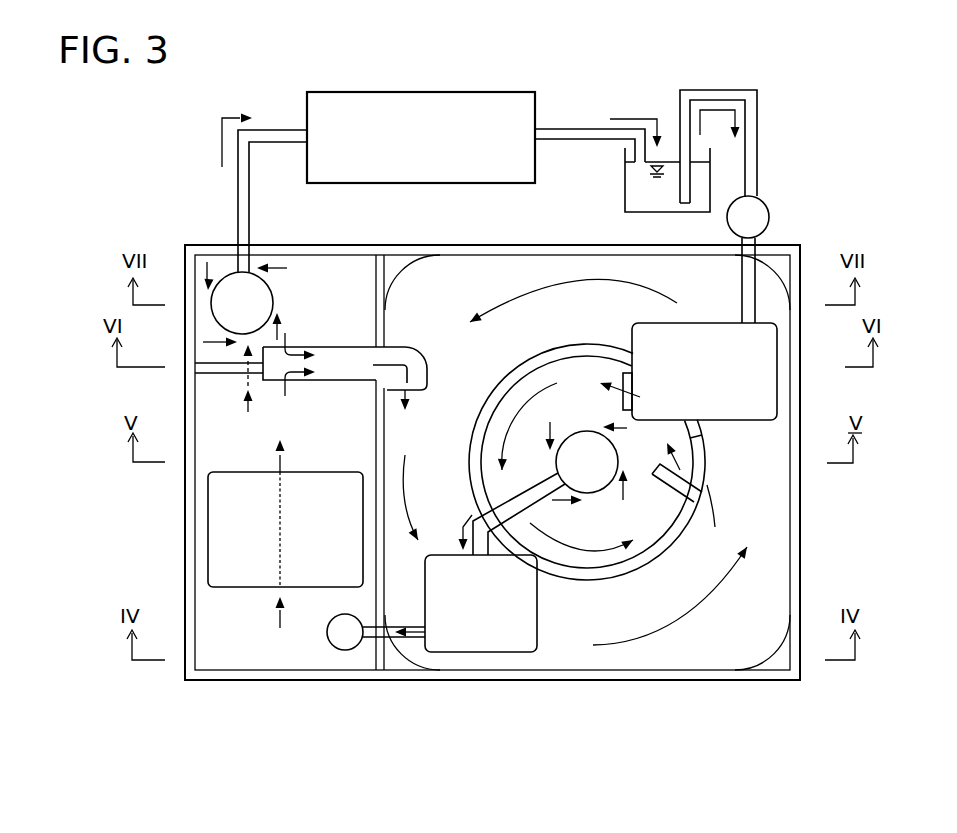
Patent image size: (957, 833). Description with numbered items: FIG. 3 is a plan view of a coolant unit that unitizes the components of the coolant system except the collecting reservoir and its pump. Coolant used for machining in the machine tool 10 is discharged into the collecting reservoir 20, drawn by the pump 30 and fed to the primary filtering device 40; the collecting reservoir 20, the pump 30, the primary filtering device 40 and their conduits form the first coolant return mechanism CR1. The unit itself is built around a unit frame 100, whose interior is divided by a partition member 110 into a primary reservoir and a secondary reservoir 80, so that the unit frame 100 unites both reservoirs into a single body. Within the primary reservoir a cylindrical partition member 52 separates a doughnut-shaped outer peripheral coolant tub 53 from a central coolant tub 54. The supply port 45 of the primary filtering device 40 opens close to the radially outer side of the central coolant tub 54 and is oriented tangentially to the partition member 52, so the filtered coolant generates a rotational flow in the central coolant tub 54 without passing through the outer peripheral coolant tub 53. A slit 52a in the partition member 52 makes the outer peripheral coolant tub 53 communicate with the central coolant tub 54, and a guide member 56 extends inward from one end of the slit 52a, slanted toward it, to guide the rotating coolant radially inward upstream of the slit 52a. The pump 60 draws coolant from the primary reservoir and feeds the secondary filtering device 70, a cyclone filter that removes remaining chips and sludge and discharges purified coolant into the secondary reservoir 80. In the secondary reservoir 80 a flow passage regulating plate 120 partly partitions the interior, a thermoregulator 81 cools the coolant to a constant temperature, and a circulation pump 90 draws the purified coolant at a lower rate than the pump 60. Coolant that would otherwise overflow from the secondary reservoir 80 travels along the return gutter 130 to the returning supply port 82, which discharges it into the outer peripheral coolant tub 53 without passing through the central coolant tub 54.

The machine tool 10 is at (495, 92).
The first coolant return mechanism CR1 is at (783, 123).
The collecting reservoir 20 is at (717, 180).
The pump 30 is at (770, 215).
The primary filtering device 40 is at (777, 375).
The supply port 45 is at (622, 377).
The partition member 52 is at (540, 350).
The slit 52a is at (705, 453).
The outer peripheral coolant tub 53 is at (567, 640).
The central coolant tub 54 is at (613, 550).
The guide member 56 is at (708, 488).
The pump 60 is at (580, 430).
The secondary filtering device 70 is at (478, 652).
The secondary reservoir 80 is at (225, 638).
The thermoregulator 81 is at (208, 530).
The returning supply port 82 is at (432, 395).
The circulation pump 90 is at (226, 275).
The unit frame 100 is at (263, 680).
The partition member 110 is at (373, 560).
The flow passage regulating plate 120 is at (223, 373).
The return gutter 130 is at (322, 345).